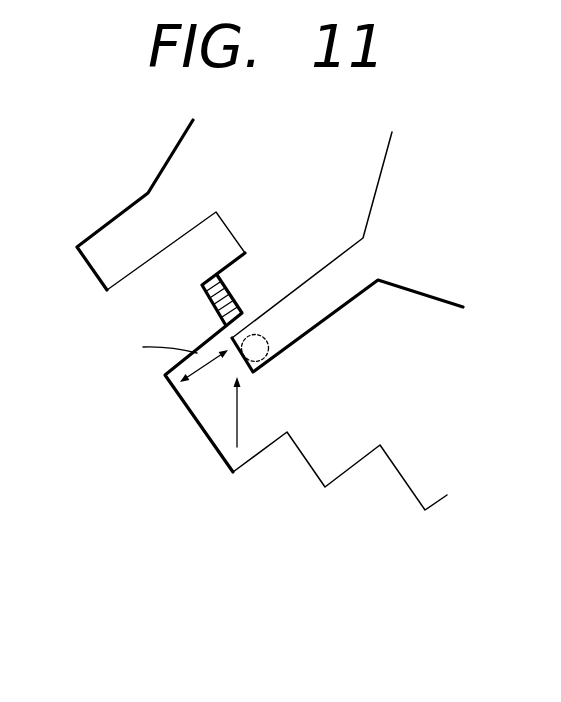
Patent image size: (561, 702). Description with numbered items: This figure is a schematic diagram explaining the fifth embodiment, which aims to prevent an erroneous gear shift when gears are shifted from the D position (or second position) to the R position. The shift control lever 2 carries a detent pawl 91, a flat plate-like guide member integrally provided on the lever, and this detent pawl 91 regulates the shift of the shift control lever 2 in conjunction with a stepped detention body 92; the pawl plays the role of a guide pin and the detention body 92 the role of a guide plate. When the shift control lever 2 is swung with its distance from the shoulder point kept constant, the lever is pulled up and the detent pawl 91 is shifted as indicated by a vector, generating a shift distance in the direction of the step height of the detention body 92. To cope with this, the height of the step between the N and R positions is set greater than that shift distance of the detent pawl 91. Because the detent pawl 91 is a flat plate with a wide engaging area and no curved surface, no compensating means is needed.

The detention body 92 is at (83, 147).
The detent pawl 91 is at (343, 295).
The shift control lever 2 is at (340, 471).